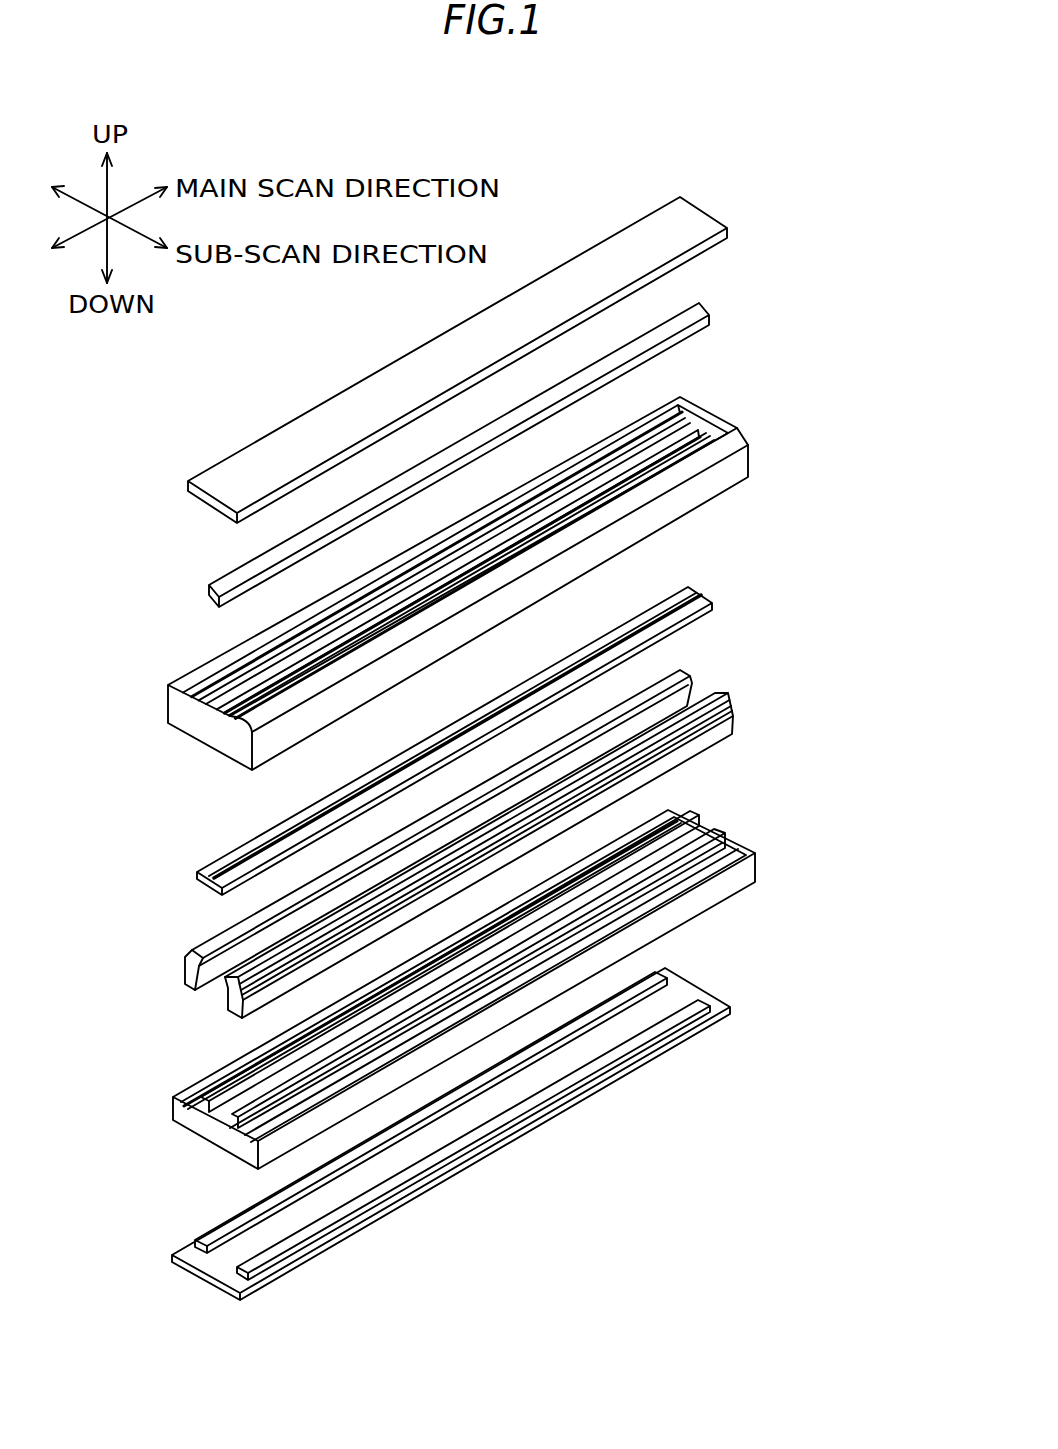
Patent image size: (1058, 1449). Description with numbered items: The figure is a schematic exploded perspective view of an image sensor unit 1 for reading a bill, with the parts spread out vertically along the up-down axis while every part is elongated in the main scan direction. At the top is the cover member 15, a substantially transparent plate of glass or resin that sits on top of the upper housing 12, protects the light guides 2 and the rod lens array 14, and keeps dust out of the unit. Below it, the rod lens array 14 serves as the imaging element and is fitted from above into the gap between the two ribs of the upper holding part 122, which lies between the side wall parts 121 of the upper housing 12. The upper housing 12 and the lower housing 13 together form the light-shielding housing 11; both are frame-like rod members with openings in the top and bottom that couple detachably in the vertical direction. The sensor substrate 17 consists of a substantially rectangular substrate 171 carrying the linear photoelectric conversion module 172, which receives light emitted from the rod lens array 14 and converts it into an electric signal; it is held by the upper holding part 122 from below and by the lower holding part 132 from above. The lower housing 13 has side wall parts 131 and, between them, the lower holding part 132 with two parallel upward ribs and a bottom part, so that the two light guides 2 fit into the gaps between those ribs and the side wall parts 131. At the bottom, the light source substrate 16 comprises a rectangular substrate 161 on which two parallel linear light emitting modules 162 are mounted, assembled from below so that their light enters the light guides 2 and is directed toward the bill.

The image sensor unit 1 is at (784, 1308).
The light guide 2 is at (692, 671).
The housing 11 is at (483, 744).
The upper housing 12 is at (473, 545).
The side wall parts 121 is at (617, 540).
The upper holding part 122 is at (247, 692).
The lower housing 13 is at (483, 989).
The side wall parts 131 is at (632, 938).
The lower holding part 132 is at (225, 1092).
The rod lens array 14 is at (701, 301).
The cover member 15 is at (709, 215).
The light source substrate 16 is at (430, 1169).
The substrate 161 is at (215, 1270).
The light emitting modules 162 is at (223, 1232).
The sensor substrate 17 is at (467, 713).
The substrate 171 is at (196, 884).
The photoelectric conversion module 172 is at (263, 848).